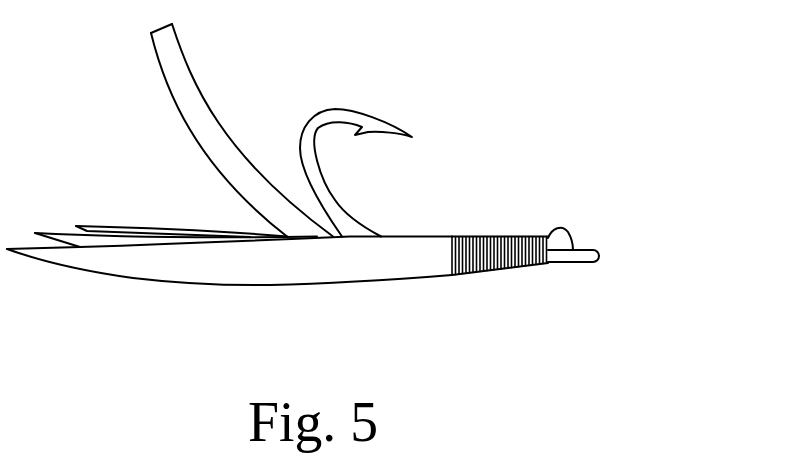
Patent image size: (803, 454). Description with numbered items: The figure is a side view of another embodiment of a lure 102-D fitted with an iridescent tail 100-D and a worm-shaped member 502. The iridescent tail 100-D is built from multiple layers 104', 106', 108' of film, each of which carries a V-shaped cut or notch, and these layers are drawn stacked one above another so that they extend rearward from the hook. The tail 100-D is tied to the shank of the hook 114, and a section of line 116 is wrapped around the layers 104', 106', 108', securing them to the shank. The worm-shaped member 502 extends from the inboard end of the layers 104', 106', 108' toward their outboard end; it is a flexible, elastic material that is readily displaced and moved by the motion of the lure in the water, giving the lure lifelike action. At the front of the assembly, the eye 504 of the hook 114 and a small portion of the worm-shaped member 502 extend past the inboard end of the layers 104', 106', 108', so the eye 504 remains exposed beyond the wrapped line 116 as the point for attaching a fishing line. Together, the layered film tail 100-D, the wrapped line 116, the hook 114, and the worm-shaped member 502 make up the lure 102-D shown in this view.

The iridescent tail 100-D is at (82, 321).
The lure 102-D is at (596, 79).
The layer 104' is at (229, 298).
The layer 106' is at (181, 196).
The layer 108' is at (166, 202).
The hook 114 is at (337, 110).
The line 116 is at (518, 238).
The worm-shaped member 502 is at (166, 84).
The eye 504 is at (583, 263).